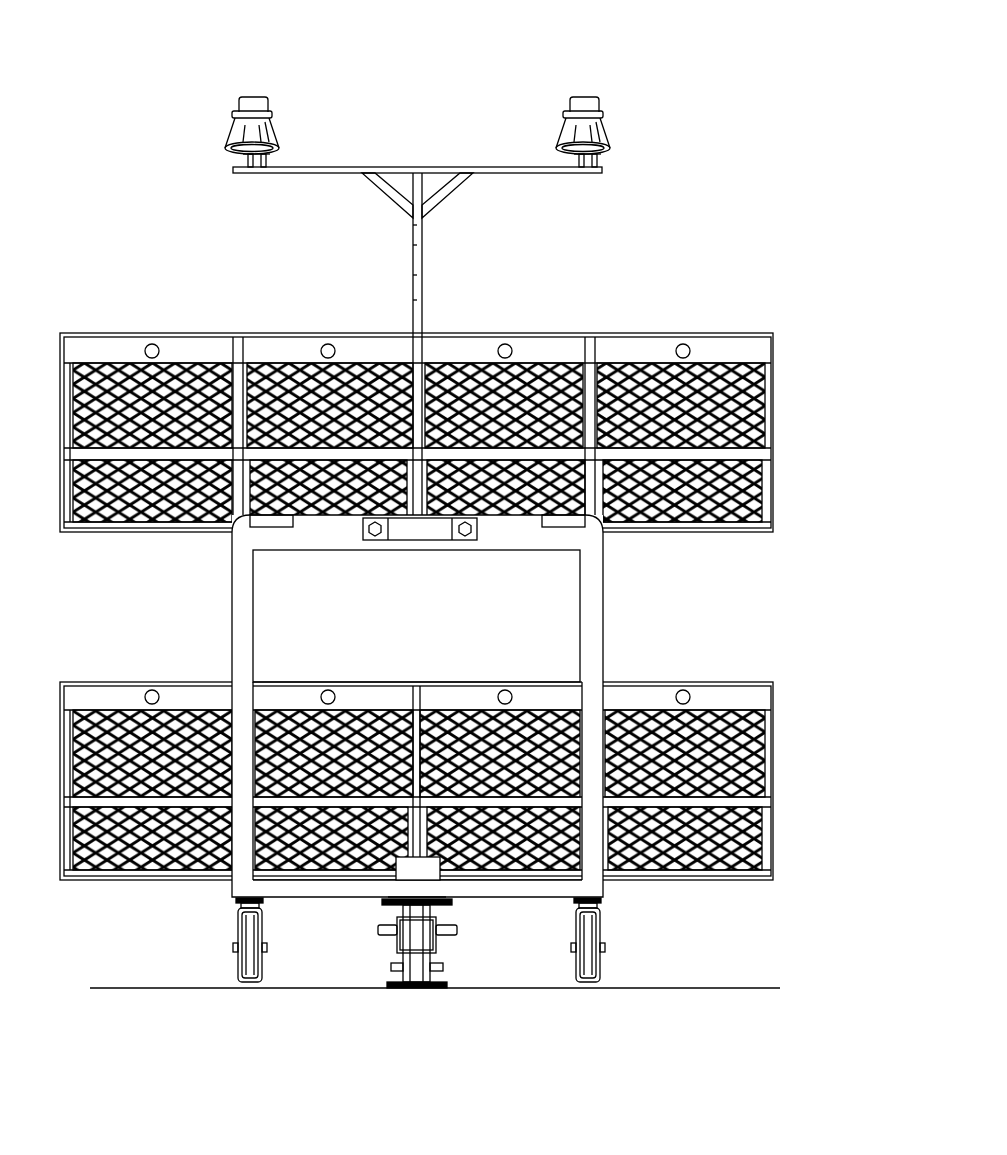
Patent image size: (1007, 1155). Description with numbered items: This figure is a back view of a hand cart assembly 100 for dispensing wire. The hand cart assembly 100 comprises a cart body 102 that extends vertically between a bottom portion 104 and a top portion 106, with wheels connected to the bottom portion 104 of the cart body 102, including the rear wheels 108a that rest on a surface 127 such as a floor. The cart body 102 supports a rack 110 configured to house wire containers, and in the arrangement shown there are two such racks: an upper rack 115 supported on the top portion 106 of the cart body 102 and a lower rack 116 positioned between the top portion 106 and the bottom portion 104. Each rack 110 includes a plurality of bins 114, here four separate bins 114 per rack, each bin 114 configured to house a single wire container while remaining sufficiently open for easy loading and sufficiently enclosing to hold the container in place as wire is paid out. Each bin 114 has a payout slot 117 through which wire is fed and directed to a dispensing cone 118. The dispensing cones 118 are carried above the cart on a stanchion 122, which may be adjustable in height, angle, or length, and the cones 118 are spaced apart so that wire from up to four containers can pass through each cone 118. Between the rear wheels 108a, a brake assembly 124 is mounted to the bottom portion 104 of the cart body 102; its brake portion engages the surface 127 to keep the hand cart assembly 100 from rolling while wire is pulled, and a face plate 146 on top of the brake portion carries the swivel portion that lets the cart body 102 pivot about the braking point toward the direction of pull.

The hand cart assembly 100 is at (733, 64).
The cart body 102 is at (454, 736).
The bottom portion 104 is at (320, 898).
The top portion 106 is at (330, 517).
The rear wheels 108a is at (246, 984).
The rack 110 is at (452, 591).
The bin 114 is at (123, 333).
The upper rack 115 is at (452, 417).
The lower rack 116 is at (774, 752).
The payout slot 117 is at (690, 350).
The dispensing cone 118 is at (254, 96).
The stanchion 122 is at (423, 272).
The brake assembly 124 is at (450, 942).
The surface 127 is at (722, 987).
The face plate 146 is at (448, 907).